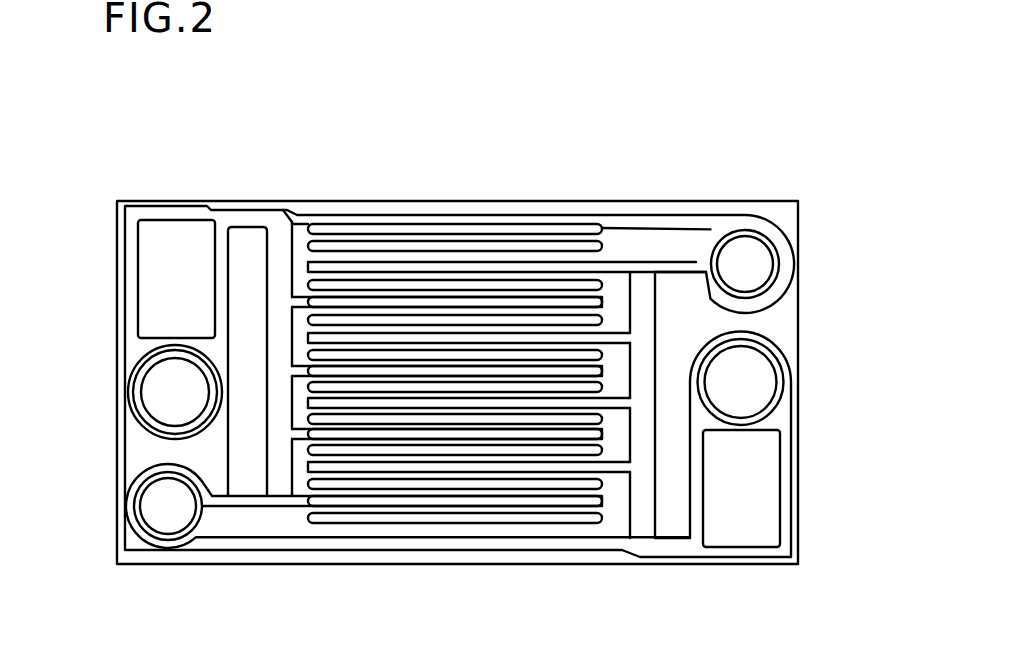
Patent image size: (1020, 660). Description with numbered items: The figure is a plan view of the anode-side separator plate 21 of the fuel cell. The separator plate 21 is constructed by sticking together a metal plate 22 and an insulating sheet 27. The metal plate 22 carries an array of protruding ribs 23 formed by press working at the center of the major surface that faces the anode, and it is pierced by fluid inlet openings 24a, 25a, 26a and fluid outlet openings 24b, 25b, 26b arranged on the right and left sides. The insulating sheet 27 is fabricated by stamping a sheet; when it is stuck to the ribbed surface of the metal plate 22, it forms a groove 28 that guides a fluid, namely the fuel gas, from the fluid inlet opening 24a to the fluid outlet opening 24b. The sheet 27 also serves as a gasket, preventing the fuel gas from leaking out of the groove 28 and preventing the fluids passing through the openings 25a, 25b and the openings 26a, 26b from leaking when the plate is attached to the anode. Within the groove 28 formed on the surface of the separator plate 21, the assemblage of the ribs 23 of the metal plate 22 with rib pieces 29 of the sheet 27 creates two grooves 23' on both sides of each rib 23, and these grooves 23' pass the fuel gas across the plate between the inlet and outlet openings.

The anode-side separator plate 21 is at (468, 193).
The metal plate 22 is at (773, 213).
The protruding ribs 23 is at (455, 329).
The grooves 23' is at (461, 386).
The fluid inlet opening 24a is at (760, 262).
The fluid outlet opening 24b is at (167, 515).
The fluid inlet opening 25a is at (753, 385).
The fluid outlet opening 25b is at (172, 390).
The fluid inlet opening 26a is at (747, 490).
The fluid outlet opening 26b is at (167, 295).
The insulating sheet 27 is at (273, 212).
The groove 28 is at (618, 243).
The rib pieces 29 is at (300, 498).